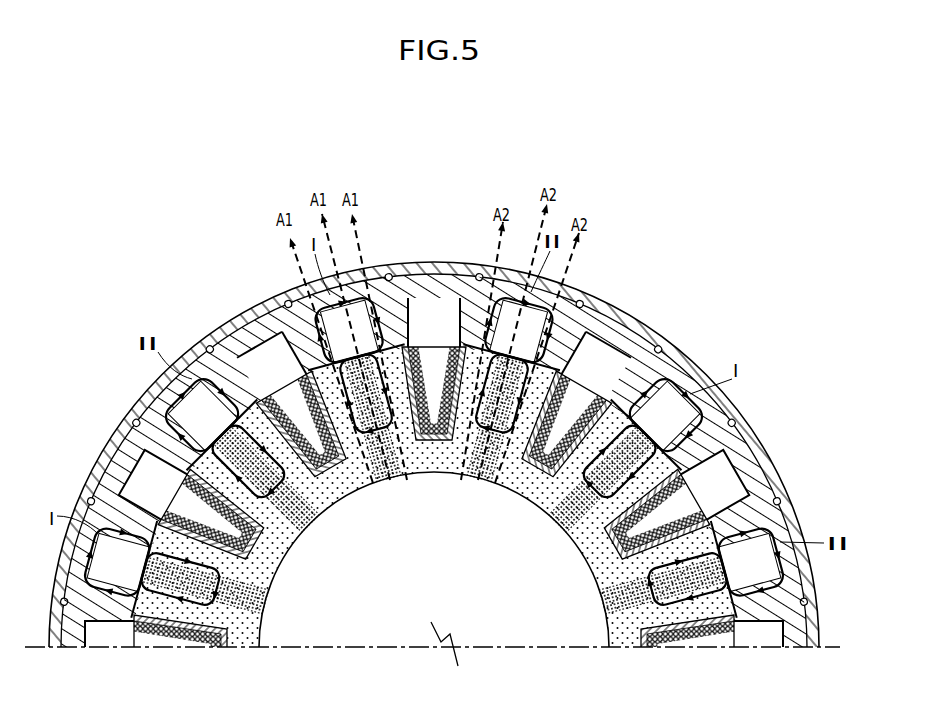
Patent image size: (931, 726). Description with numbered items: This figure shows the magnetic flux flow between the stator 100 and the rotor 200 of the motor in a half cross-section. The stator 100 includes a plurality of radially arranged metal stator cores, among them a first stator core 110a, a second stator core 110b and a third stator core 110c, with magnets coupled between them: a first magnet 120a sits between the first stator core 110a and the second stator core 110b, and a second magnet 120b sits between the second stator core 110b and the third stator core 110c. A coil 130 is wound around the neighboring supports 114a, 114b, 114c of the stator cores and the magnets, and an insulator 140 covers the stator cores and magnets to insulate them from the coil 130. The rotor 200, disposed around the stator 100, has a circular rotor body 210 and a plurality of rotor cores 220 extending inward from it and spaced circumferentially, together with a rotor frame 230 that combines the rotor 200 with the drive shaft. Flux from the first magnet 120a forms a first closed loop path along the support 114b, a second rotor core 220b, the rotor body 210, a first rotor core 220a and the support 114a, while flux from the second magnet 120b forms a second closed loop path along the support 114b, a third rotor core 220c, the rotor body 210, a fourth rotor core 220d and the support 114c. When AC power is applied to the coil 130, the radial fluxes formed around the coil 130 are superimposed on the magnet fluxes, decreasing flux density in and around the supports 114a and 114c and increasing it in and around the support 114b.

The stator 100 is at (596, 573).
The first stator core 110a is at (335, 480).
The second stator core 110b is at (437, 446).
The third stator core 110c is at (530, 481).
The support 114a is at (318, 479).
The support 114b is at (426, 434).
The support 114c is at (547, 466).
The first magnet 120a is at (381, 473).
The second magnet 120b is at (481, 475).
The coil 130 is at (232, 346).
The insulator 140 is at (627, 350).
The rotor 200 is at (763, 443).
The rotor body 210 is at (743, 476).
The rotor cores 220 is at (423, 276).
The first rotor core 220a is at (266, 335).
The second rotor core 220b is at (405, 325).
The third rotor core 220c is at (462, 322).
The fourth rotor core 220d is at (567, 342).
The rotor frame 230 is at (733, 425).